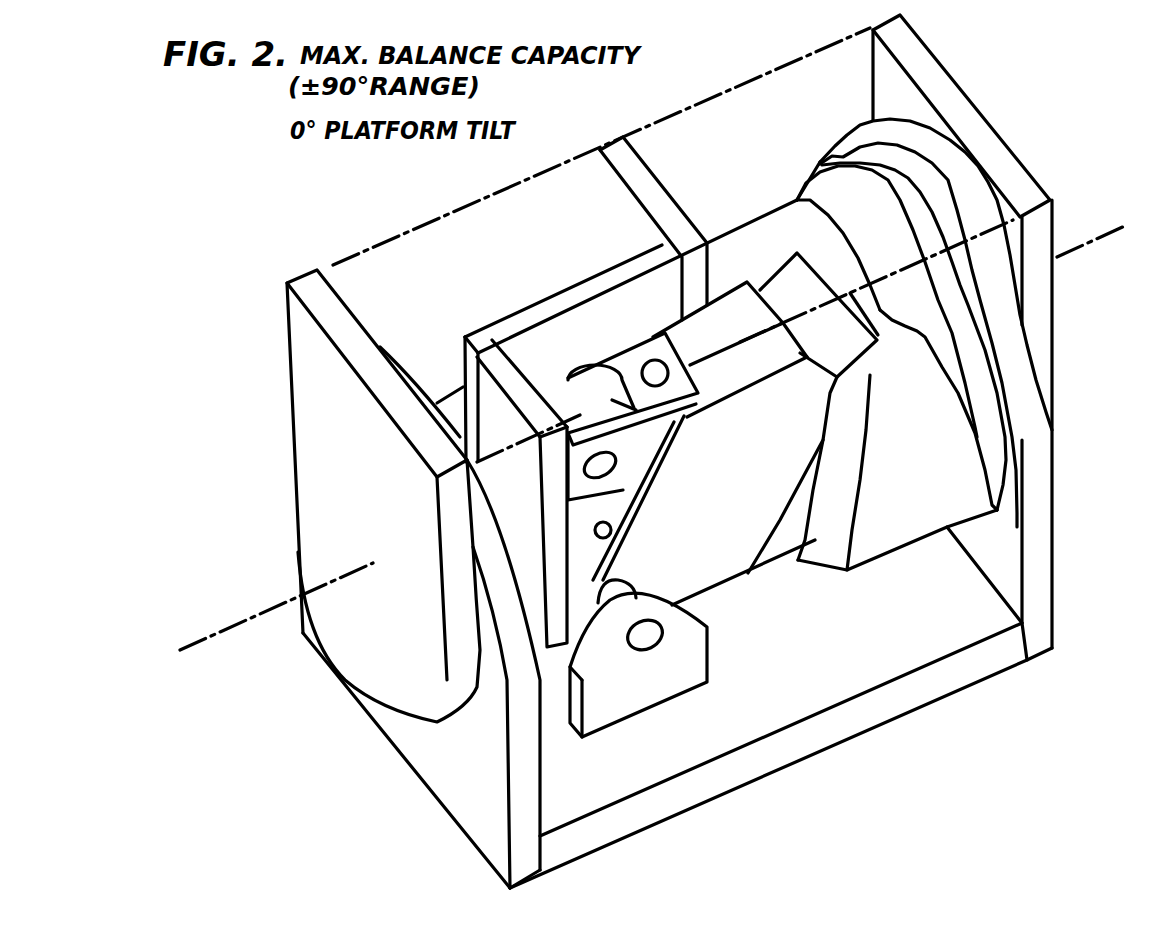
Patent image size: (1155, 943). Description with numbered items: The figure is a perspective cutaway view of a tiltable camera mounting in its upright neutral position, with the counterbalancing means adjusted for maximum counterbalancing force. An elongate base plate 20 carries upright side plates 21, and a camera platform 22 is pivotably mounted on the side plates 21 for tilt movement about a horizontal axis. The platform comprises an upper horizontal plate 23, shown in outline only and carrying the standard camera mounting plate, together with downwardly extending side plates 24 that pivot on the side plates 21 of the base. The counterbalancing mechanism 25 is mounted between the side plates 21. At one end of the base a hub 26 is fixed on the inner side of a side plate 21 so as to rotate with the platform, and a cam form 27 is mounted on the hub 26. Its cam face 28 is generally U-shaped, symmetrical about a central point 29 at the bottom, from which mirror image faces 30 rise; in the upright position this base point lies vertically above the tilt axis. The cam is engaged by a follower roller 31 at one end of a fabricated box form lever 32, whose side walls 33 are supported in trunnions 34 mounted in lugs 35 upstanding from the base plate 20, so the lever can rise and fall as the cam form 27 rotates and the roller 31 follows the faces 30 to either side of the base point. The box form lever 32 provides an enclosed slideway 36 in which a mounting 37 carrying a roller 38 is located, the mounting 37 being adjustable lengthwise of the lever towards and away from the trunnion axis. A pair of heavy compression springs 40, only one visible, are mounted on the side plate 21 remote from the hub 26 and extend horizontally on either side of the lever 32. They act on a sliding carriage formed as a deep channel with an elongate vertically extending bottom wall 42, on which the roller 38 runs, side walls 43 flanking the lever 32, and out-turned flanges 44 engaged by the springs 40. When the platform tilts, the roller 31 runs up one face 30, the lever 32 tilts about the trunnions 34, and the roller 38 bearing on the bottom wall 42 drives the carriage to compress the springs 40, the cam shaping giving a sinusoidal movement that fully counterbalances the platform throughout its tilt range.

The base plate 20 is at (781, 707).
The side plates 21 is at (709, 544).
The platform 22 is at (451, 185).
The upper horizontal plate 23 is at (432, 241).
The side plates 24 is at (674, 347).
The counterbalancing mechanism 25 is at (928, 645).
The hub 26 is at (987, 402).
The cam form 27 is at (917, 527).
The cam face 28 is at (838, 552).
The central point 29 is at (883, 315).
The mirror image faces 30 is at (812, 538).
The roller 31 is at (787, 280).
The box form lever 32 is at (733, 556).
The side walls 33 is at (712, 573).
The trunnions 34 is at (620, 585).
The lugs 35 is at (653, 693).
The slideway 36 is at (638, 498).
The mounting 37 is at (640, 352).
The roller 38 is at (577, 375).
The compression springs 40 is at (390, 300).
The bottom wall 42 is at (500, 490).
The side walls 43 is at (613, 275).
The out-turned flanges 44 is at (647, 178).